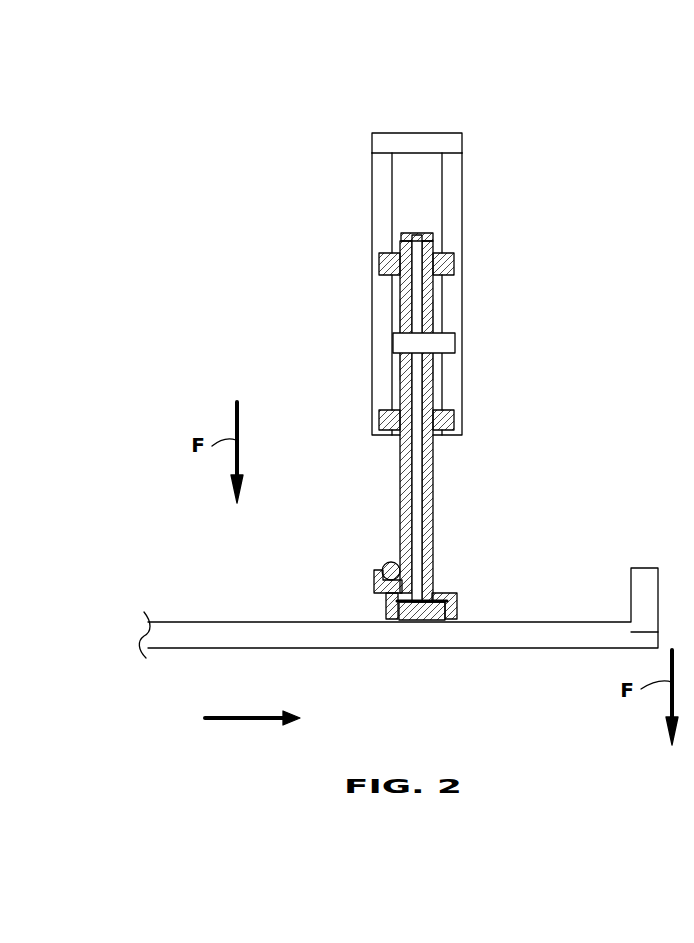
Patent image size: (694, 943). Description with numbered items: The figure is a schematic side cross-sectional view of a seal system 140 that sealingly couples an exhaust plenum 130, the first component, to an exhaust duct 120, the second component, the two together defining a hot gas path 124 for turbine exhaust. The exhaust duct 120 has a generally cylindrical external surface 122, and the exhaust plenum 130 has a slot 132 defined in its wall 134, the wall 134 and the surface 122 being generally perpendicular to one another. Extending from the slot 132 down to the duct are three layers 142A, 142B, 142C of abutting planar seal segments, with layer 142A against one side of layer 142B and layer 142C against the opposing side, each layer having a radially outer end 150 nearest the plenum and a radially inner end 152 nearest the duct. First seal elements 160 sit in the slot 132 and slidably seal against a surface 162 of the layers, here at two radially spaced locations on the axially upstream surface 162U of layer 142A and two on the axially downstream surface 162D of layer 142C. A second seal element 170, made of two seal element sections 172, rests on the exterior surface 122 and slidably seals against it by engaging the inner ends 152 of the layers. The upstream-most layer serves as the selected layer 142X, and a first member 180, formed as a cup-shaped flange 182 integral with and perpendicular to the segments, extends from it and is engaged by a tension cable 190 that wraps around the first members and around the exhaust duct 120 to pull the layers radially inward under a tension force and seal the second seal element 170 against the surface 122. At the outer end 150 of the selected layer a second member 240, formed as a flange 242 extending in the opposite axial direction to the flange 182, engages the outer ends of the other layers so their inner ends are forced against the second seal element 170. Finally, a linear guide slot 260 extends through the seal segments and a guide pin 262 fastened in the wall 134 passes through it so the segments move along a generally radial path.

The exhaust duct 120 is at (378, 616).
The external surface 122 is at (223, 634).
The hot gas path 124 is at (243, 722).
The exhaust plenum 130 is at (406, 251).
The slot 132 is at (437, 370).
The wall 134 is at (380, 187).
The seal system 140 is at (318, 112).
The layer of abutting planar seal segments 142A is at (389, 387).
The selected layer 142X is at (485, 421).
The layer of abutting planar seal segments 142B is at (413, 243).
The layer of abutting planar seal segments 142C is at (440, 286).
The outer end 150 is at (418, 298).
The inner end 152 is at (410, 545).
The first seal element 160 is at (386, 262).
The surface 162 is at (383, 337).
The axially upstream surface 162U is at (383, 337).
The axially downstream surface 162D is at (400, 318).
The second seal element 170 is at (420, 623).
The seal element section 172 is at (395, 607).
The first member 180 is at (314, 571).
The flange 182 is at (373, 582).
The tension cable 190 is at (386, 565).
The second member 240 is at (498, 213).
The flange 242 is at (430, 237).
The linear guide slot 260 is at (416, 364).
The guide pin 262 is at (407, 347).